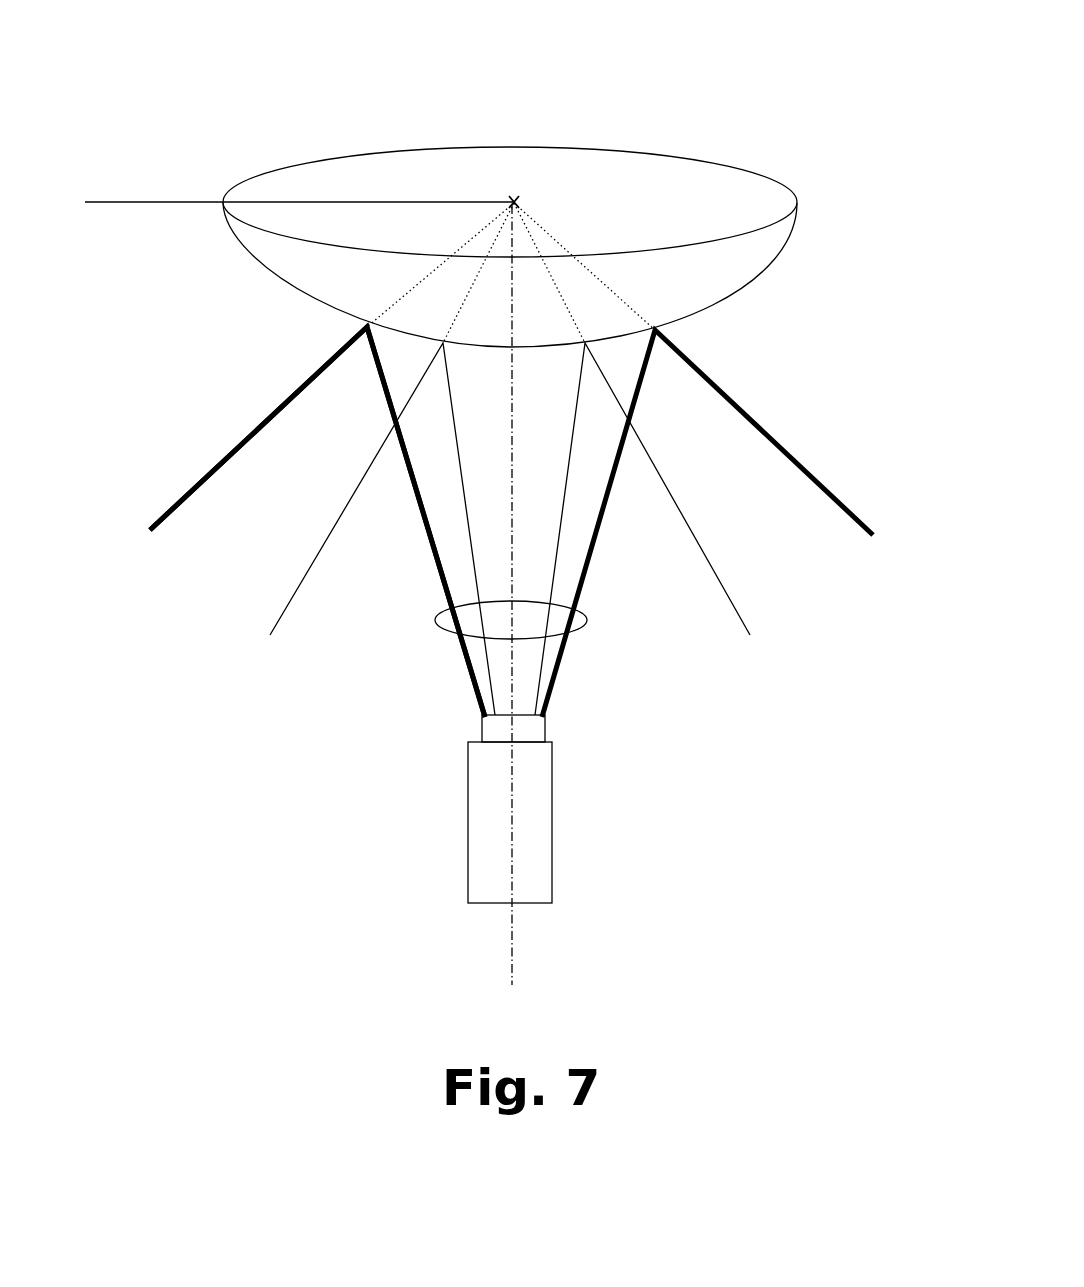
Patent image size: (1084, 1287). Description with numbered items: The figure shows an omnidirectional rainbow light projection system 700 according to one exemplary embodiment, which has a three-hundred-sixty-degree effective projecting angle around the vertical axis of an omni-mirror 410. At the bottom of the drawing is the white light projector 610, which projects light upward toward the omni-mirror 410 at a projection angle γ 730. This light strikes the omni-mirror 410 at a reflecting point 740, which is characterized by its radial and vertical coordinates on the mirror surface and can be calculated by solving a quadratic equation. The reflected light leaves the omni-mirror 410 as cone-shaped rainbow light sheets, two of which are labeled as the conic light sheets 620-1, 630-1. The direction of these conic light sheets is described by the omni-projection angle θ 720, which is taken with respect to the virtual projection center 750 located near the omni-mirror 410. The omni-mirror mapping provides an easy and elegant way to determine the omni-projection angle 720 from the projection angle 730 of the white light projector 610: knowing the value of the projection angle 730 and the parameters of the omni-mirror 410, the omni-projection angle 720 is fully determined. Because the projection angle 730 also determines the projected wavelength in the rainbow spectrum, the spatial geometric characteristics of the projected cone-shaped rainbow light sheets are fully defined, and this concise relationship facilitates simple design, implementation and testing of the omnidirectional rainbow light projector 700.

The omnidirectional rainbow light projection system 700 is at (327, 62).
The omni-mirror 410 is at (797, 203).
The omni-projection angle θ 720 is at (474, 220).
The virtual projection center 750 is at (516, 200).
The reflecting point 740 is at (367, 327).
The conic light sheet 630-1 is at (430, 545).
The conic light sheet 620-1 is at (458, 453).
The projection angle γ 730 is at (508, 650).
The white light projector 610 is at (553, 826).